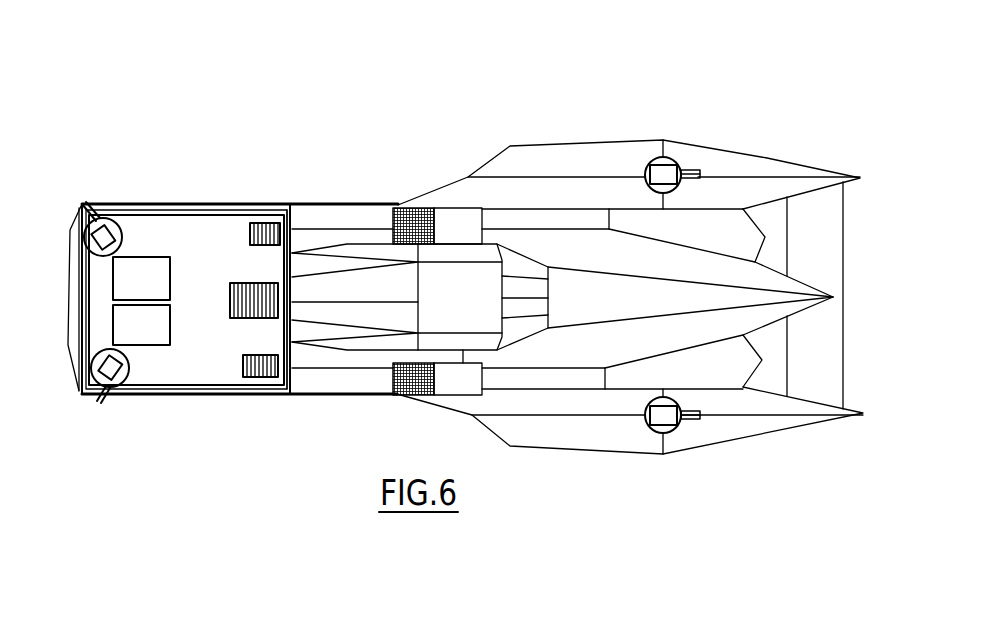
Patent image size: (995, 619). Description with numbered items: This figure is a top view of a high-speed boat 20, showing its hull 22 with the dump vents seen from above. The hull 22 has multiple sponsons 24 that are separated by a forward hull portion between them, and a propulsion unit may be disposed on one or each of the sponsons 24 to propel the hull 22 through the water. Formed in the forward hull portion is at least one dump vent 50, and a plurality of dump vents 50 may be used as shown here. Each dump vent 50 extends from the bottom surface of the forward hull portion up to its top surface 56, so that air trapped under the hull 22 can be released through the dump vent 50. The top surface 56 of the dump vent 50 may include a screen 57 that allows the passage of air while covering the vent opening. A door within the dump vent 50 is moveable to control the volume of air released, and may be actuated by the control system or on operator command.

The high-speed boat 20 is at (497, 90).
The hull 22 is at (355, 202).
The sponsons 24 is at (713, 153).
The dump vent 50 is at (422, 396).
The top surface 56 is at (450, 390).
The screen 57 is at (395, 396).